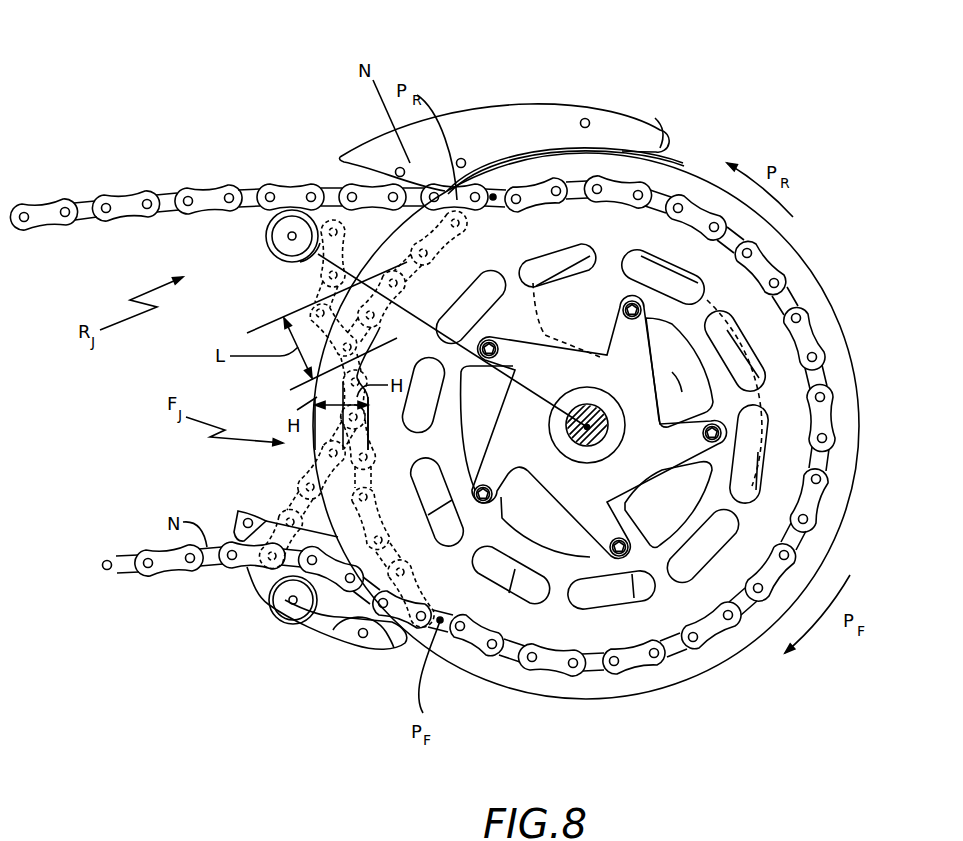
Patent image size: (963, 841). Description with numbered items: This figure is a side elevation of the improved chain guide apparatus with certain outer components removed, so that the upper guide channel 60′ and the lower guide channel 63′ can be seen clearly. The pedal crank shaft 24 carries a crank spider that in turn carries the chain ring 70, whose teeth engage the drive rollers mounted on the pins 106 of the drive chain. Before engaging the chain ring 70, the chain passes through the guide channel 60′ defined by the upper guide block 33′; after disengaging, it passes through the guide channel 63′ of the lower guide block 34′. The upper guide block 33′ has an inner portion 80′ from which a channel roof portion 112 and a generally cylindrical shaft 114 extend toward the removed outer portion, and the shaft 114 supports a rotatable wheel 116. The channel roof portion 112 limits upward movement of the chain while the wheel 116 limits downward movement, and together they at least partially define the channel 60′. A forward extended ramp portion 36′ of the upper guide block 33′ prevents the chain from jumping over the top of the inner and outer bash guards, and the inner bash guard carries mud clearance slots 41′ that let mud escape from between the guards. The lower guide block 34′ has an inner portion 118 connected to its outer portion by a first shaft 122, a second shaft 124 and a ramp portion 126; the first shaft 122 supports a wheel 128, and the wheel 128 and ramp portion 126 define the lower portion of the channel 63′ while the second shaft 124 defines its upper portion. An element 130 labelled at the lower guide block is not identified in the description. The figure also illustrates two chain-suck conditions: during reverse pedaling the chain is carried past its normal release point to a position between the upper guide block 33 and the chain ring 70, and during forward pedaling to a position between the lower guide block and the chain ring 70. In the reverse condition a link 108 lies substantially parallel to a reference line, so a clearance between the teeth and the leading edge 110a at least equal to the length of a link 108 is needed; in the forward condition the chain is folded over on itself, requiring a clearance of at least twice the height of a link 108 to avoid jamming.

The pedal crank shaft 24 is at (587, 448).
The upper guide block 33 is at (810, 333).
The upper guide block 33′ is at (380, 144).
The lower guide block 34′ is at (230, 565).
The forward extended ramp portion 36′ is at (630, 132).
The mud clearance slots 41′ is at (683, 373).
The guide channel 60′ is at (470, 120).
The guide channel 63′ is at (230, 674).
The chain ring 70 is at (557, 290).
The inner portion 80′ is at (527, 103).
The pins 106 is at (343, 152).
The link 108 is at (313, 263).
The pulley contact surface 110a is at (307, 253).
The channel roof portion 112 is at (362, 200).
The shaft 114 is at (285, 233).
The wheel 116 is at (268, 243).
The inner portion 118 is at (272, 623).
The first shaft 122 is at (266, 630).
The second shaft 124 is at (247, 513).
The ramp portion 126 is at (374, 655).
The wheel 128 is at (288, 612).
The lower guide upper plate 130 is at (290, 527).